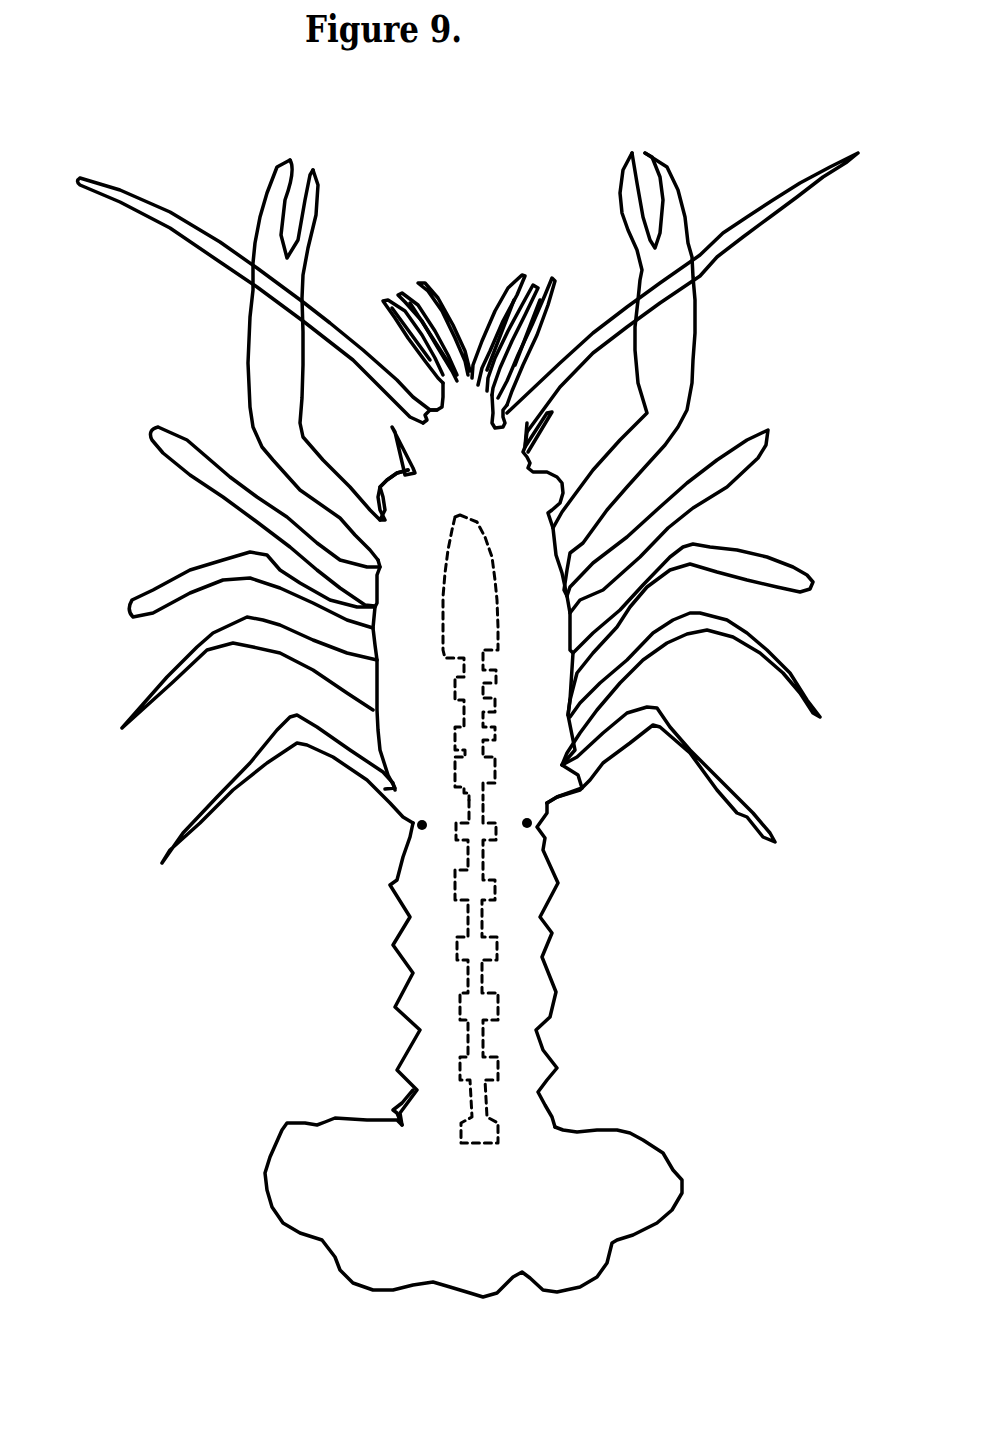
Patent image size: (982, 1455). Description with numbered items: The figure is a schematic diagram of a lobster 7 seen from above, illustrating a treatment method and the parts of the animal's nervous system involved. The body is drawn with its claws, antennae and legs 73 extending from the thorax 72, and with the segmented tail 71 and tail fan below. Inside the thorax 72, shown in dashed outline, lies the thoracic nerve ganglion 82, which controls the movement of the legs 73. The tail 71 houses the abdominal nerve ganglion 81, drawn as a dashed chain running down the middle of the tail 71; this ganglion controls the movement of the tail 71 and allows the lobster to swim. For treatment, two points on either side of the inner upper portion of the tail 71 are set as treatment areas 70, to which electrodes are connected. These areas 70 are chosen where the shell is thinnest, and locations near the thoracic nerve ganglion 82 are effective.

The lobster 7 is at (477, 390).
The treatment areas 70 is at (413, 823).
The tail 71 is at (533, 1067).
The thorax 72 is at (543, 672).
The legs 73 is at (211, 643).
The abdominal nerve ganglion 81 is at (497, 951).
The thoracic nerve ganglion 82 is at (473, 767).